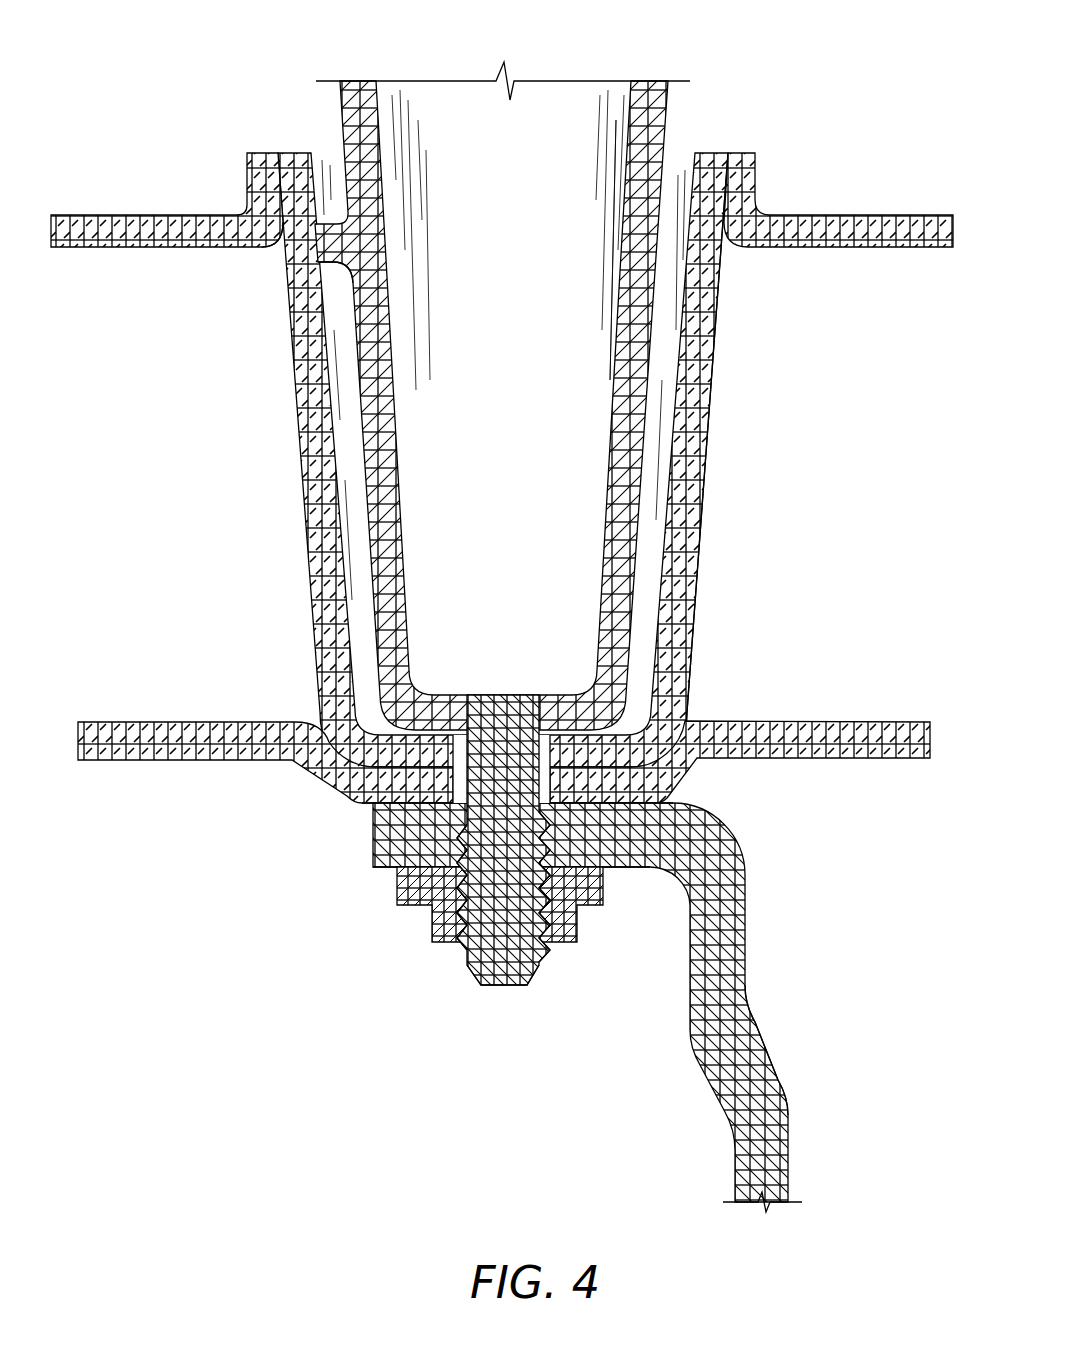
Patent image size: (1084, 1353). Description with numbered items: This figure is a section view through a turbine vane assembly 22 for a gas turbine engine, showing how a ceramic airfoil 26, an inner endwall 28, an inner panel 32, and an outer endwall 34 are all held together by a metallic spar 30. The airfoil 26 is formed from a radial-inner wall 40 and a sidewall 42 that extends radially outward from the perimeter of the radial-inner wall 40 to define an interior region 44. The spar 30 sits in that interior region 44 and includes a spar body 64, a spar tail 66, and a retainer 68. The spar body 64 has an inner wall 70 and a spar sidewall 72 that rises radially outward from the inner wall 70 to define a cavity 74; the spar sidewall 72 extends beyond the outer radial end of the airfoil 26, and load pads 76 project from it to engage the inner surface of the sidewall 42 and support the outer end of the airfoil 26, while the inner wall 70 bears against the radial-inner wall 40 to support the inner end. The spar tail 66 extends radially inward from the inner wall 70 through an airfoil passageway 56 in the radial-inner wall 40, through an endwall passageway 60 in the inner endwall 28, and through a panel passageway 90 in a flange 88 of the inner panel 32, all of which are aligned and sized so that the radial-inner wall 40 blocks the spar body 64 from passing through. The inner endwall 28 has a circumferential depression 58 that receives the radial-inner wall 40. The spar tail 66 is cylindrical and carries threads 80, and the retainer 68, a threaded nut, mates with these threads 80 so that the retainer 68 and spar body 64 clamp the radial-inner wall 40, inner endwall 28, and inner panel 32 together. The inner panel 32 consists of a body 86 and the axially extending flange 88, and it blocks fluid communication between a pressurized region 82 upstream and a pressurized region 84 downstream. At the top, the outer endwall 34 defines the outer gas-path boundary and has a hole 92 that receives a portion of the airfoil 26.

The turbine vane assembly 22 is at (133, 55).
The airfoil 26 is at (300, 515).
The inner endwall 28 is at (158, 722).
The spar 30 is at (650, 400).
The inner panel 32 is at (750, 992).
The outer endwall 34 is at (130, 215).
The radial-inner wall 40 is at (370, 772).
The sidewall 42 is at (305, 648).
The interior region 44 is at (676, 190).
The airfoil passageway 56 is at (318, 157).
The depression 58 is at (614, 755).
The endwall passageway 60 is at (544, 790).
The spar body 64 is at (643, 523).
The spar tail 66 is at (500, 989).
The retainer 68 is at (423, 931).
The inner wall 70 is at (500, 690).
The spar sidewall 72 is at (400, 462).
The cavity 74 is at (623, 108).
The load pads 76 is at (333, 268).
The threads 80 is at (542, 905).
The pressurized region 82 is at (633, 1181).
The pressurized region 84 is at (922, 1181).
The body 86 is at (783, 1078).
The flange 88 is at (630, 869).
The panel passageway 90 is at (458, 866).
The hole 92 is at (277, 247).